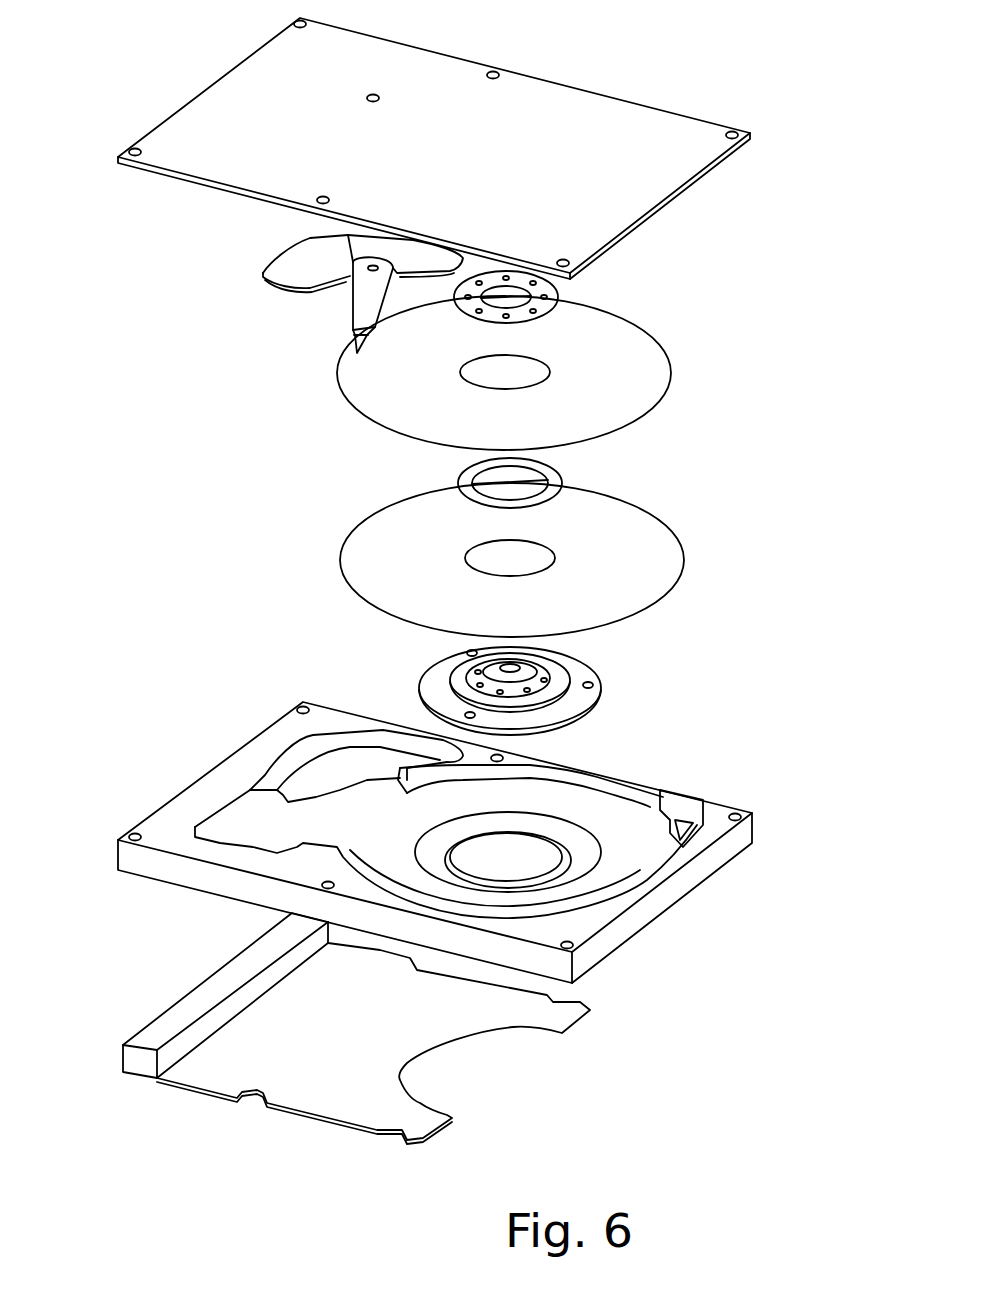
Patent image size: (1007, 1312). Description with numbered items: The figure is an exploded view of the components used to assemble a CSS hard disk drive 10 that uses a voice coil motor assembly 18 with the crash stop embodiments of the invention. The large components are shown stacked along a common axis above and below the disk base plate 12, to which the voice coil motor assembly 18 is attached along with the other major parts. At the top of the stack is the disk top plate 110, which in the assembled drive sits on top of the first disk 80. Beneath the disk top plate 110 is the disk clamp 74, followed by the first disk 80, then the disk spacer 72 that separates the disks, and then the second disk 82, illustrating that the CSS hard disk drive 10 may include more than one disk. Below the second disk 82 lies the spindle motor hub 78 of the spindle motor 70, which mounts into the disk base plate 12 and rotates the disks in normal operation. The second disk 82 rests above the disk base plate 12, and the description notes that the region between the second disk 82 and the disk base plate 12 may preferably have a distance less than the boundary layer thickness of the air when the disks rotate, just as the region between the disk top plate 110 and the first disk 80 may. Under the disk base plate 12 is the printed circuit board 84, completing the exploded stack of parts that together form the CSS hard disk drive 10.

The CSS hard disk drive 10 is at (112, 12).
The disk top plate 110 is at (680, 115).
The voice coil motor assembly 18 is at (262, 232).
The disk clamp 74 is at (558, 287).
The first disk 80 is at (668, 362).
The disk spacer 72 is at (562, 476).
The second disk 82 is at (672, 549).
The spindle motor hub 78 is at (543, 667).
The spindle motor 70 is at (558, 677).
The disk base plate 12 is at (700, 873).
The printed circuit board 84 is at (587, 1012).